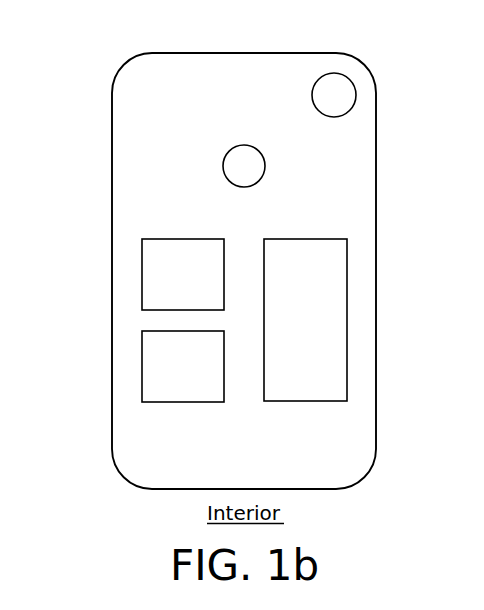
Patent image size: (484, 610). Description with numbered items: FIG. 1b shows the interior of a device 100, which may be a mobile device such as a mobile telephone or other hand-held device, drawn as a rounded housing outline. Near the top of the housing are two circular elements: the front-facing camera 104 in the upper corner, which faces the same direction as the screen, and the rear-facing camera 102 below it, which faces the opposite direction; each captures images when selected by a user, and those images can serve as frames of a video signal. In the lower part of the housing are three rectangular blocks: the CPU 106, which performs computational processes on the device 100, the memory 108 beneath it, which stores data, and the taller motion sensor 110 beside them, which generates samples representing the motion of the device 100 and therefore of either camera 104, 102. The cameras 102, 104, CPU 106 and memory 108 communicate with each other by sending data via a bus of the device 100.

The device 100 is at (112, 426).
The rear-facing camera 102 is at (223, 164).
The front-facing camera 104 is at (350, 79).
The CPU 106 is at (142, 275).
The memory 108 is at (142, 365).
The motion sensor 110 is at (347, 318).